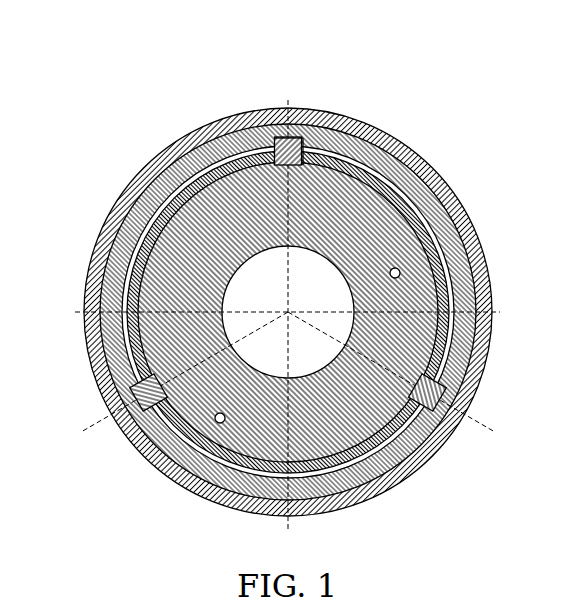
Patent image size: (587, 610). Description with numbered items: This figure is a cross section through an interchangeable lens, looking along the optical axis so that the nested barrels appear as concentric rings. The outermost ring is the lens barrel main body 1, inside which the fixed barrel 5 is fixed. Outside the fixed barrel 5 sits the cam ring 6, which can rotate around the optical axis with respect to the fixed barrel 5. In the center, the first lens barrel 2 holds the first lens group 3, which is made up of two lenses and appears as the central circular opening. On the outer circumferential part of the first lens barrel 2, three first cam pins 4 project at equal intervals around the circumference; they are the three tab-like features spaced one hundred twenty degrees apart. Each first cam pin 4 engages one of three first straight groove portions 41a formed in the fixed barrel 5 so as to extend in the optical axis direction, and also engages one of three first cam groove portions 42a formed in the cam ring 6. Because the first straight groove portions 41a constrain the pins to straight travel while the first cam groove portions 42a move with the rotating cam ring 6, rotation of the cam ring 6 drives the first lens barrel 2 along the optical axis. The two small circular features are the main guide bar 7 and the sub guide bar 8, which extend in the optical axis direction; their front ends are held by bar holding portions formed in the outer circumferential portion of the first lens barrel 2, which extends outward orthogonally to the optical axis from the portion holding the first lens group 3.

The lens barrel main body 1 is at (425, 448).
The first lens barrel 2 is at (200, 253).
The first lens group 3 is at (312, 298).
The first cam pin 4 is at (277, 155).
The first straight groove portion 41a is at (306, 150).
The first cam groove portion 42a is at (298, 142).
The fixed barrel 5 is at (137, 358).
The cam ring 6 is at (116, 326).
The main guide bar 7 is at (400, 270).
The sub guide bar 8 is at (216, 423).